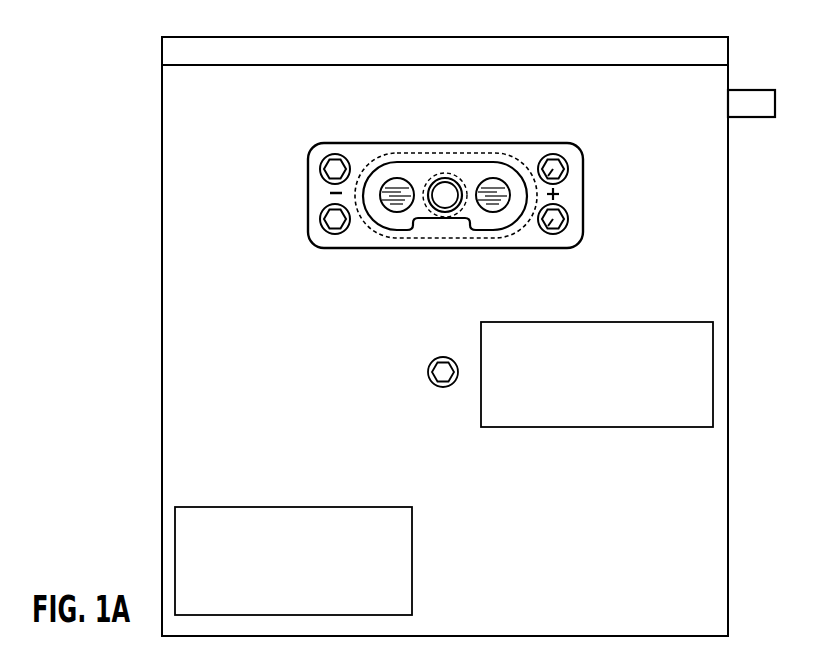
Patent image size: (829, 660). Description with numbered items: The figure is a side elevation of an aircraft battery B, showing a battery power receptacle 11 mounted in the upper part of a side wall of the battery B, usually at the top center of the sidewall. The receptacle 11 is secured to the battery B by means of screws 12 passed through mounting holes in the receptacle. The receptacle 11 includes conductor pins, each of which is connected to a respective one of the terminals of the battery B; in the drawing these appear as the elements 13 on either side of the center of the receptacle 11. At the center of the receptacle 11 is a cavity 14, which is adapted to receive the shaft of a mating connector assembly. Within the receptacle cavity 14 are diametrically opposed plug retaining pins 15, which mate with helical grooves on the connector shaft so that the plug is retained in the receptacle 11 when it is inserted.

The battery B is at (162, 196).
The battery power receptacle 11 is at (285, 138).
The screws 12 is at (553, 155).
The terminals 13 is at (398, 207).
The cavity 14 is at (450, 200).
The plug retaining pins 15 is at (445, 173).